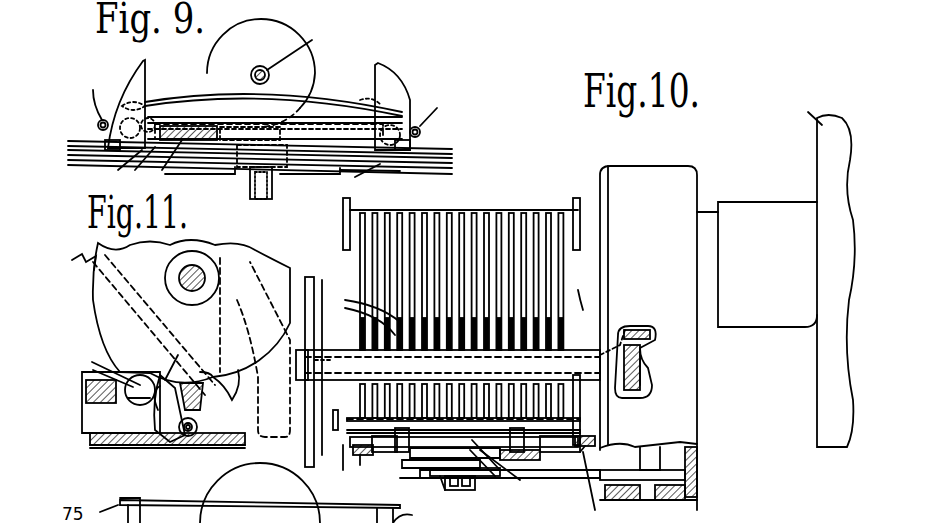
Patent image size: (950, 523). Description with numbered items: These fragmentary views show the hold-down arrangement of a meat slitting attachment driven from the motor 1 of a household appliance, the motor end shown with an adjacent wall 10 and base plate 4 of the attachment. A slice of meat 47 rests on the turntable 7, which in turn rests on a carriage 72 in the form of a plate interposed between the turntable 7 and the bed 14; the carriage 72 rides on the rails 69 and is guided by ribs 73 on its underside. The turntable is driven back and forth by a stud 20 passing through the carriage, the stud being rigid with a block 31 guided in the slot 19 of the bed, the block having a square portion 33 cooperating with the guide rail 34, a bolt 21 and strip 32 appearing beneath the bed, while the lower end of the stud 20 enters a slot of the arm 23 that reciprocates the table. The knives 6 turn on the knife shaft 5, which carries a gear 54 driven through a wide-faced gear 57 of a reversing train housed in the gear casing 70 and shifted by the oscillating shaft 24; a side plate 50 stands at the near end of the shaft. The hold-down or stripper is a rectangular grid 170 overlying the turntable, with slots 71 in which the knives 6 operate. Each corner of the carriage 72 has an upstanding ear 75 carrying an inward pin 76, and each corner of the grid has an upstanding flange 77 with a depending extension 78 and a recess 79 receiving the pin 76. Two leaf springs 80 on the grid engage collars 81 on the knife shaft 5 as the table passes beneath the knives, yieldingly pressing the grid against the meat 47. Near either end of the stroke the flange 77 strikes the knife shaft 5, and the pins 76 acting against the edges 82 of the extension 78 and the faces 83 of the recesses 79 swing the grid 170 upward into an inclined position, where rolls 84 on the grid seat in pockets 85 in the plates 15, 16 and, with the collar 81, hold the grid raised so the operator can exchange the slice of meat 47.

In FIG. 10, the motor 1 is at (812, 109).
In FIG. 10, the base plate 4 is at (697, 484).
In FIG. 9, the knife shaft 5 is at (299, 48).
In FIG. 11, the knife shaft 5 is at (180, 275).
In FIG. 10, the knife shaft 5 is at (352, 350).
In FIG. 9, the knives 6 is at (312, 38).
In FIG. 11, the knives 6 is at (95, 305).
In FIG. 10, the knives 6 is at (365, 311).
In FIG. 9, the turntable 7 is at (142, 168).
In FIG. 11, the turntable 7 is at (88, 378).
In FIG. 10, the mounting plate 10 is at (815, 205).
In FIG. 9, the bed 14 is at (455, 160).
In FIG. 9, the plate 15 is at (388, 165).
In FIG. 11, the plate 15 is at (150, 455).
In FIG. 10, the plate 15 is at (425, 460).
In FIG. 10, the plate 16 is at (526, 462).
In FIG. 10, the slot 19 is at (495, 470).
In FIG. 9, the stud 20 is at (290, 100).
In FIG. 10, the stud 20 is at (480, 485).
In FIG. 9, the bolt 21 is at (247, 183).
In FIG. 10, the bolt 21 is at (462, 495).
In FIG. 10, the arm 23 is at (545, 480).
In FIG. 10, the shaft 24 is at (697, 460).
In FIG. 10, the block 31 is at (425, 468).
In FIG. 10, the strip 32 is at (435, 476).
In FIG. 9, the square portion 33 is at (228, 174).
In FIG. 10, the square portion 33 is at (452, 490).
In FIG. 9, the guide rail 34 is at (306, 174).
In FIG. 10, the guide rail 34 is at (515, 480).
In FIG. 9, the meat 47 is at (196, 118).
In FIG. 10, the side plate 50 is at (326, 285).
In FIG. 10, the gear 54 is at (643, 380).
In FIG. 10, the wide-faced gear 57 is at (640, 335).
In FIG. 9, the rails 69 is at (361, 177).
In FIG. 11, the rails 69 is at (92, 435).
In FIG. 10, the rails 69 is at (390, 452).
In FIG. 10, the gear casing 70 is at (656, 178).
In FIG. 10, the slots 71 is at (545, 200).
In FIG. 9, the carriage 72 is at (163, 164).
In FIG. 11, the carriage 72 is at (90, 400).
In FIG. 10, the carriage 72 is at (580, 440).
In FIG. 9, the guiding ribs 73 is at (345, 170).
In FIG. 10, the guiding ribs 73 is at (478, 462).
In FIG. 11, the upstanding ear 75 is at (93, 368).
In FIG. 10, the upstanding ear 75 is at (590, 432).
In FIG. 9, the pin 76 is at (121, 169).
In FIG. 11, the pin 76 is at (92, 362).
In FIG. 10, the pin 76 is at (345, 432).
In FIG. 9, the upstanding flange 77 is at (132, 82).
In FIG. 11, the upstanding flange 77 is at (268, 276).
In FIG. 10, the upstanding flange 77 is at (352, 212).
In FIG. 9, the depending extension 78 is at (98, 121).
In FIG. 11, the depending extension 78 is at (150, 440).
In FIG. 10, the depending extension 78 is at (470, 484).
In FIG. 9, the recess 79 is at (128, 127).
In FIG. 11, the recess 79 is at (125, 432).
In FIG. 9, the leaf springs 80 is at (210, 110).
In FIG. 9, the collars 81 is at (263, 66).
In FIG. 11, the collars 81 is at (198, 251).
In FIG. 10, the collars 81 is at (352, 352).
In FIG. 9, the edges 82 is at (98, 125).
In FIG. 11, the edges 82 is at (178, 440).
In FIG. 9, the faces 83 is at (146, 108).
In FIG. 11, the faces 83 is at (150, 345).
In FIG. 9, the rolls 84 is at (262, 103).
In FIG. 11, the rolls 84 is at (210, 440).
In FIG. 10, the rolls 84 is at (402, 448).
In FIG. 11, the pockets 85 is at (196, 438).
In FIG. 9, the grid 170 is at (302, 112).
In FIG. 11, the grid 170 is at (92, 258).
In FIG. 10, the grid 170 is at (470, 222).